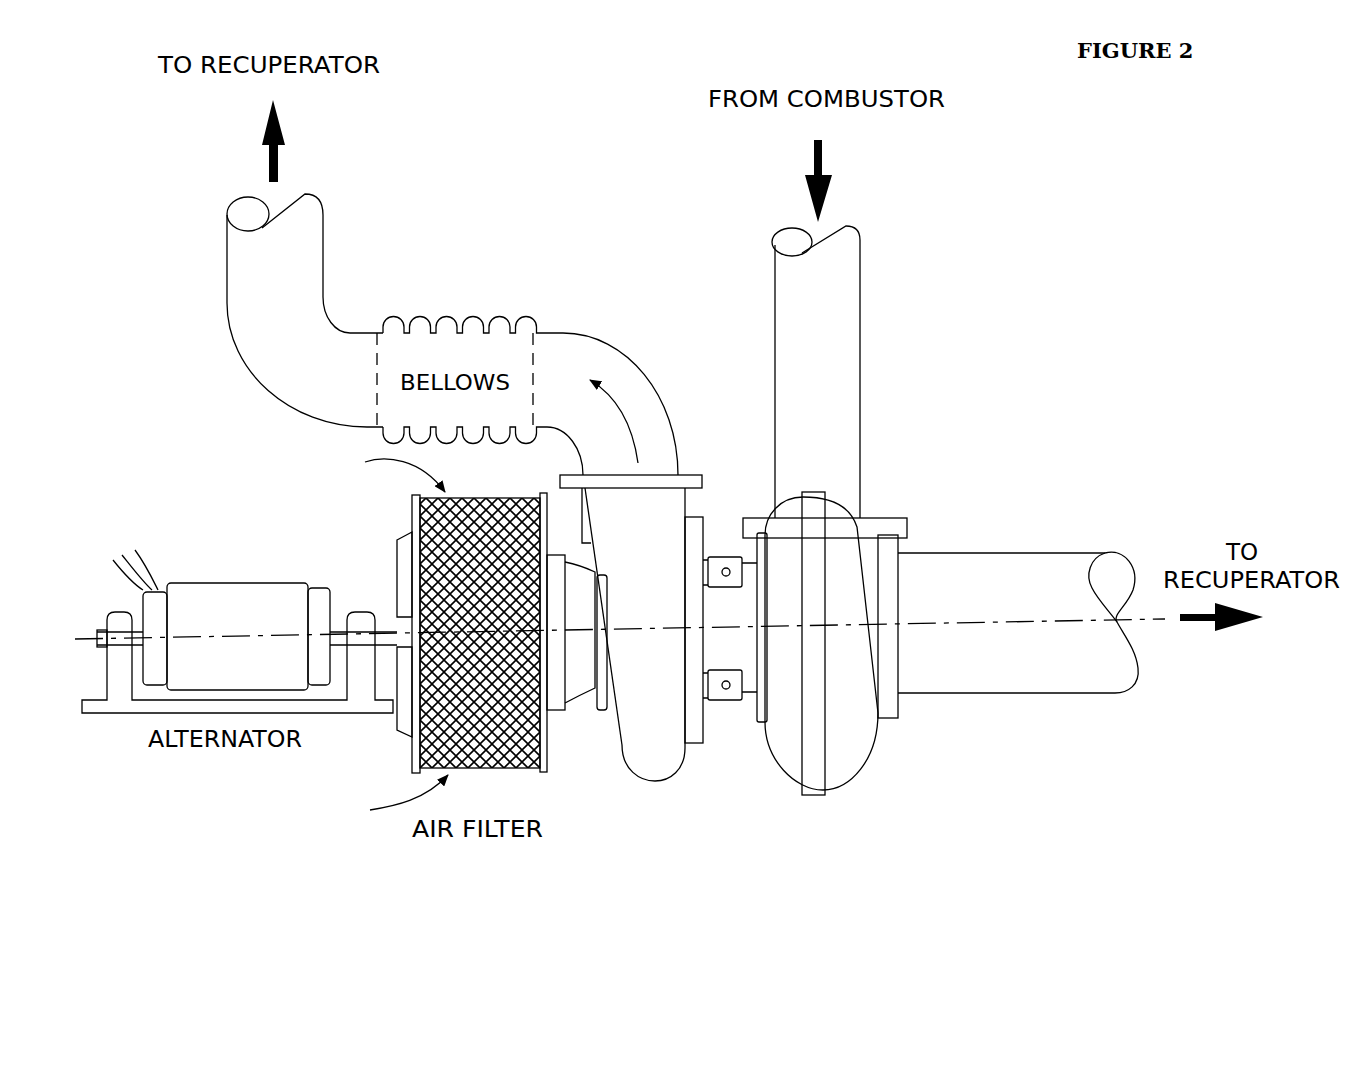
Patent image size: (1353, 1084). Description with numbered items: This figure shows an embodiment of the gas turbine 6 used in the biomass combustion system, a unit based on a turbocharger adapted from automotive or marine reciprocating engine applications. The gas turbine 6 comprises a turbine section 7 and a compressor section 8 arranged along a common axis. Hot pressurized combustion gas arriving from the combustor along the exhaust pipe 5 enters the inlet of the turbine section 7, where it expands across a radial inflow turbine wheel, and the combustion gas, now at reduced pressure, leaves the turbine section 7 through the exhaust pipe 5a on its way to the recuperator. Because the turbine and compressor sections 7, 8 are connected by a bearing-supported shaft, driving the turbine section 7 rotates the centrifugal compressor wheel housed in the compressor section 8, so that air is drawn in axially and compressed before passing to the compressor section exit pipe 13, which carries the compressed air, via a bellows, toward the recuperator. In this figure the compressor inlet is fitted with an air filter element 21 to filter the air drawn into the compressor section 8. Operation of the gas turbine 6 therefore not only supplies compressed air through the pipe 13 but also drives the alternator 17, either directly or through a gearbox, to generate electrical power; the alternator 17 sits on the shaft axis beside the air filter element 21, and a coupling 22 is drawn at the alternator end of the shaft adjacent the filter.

The exhaust pipe 5 is at (850, 353).
The exhaust pipe 5a is at (1007, 677).
The gas turbine 6 is at (803, 838).
The turbine section 7 is at (907, 522).
The compressor section 8 is at (652, 813).
The compressor section exit pipe 13 is at (588, 340).
The alternator 17 is at (210, 610).
The air filter element 21 is at (410, 745).
The coupling 22 is at (393, 625).